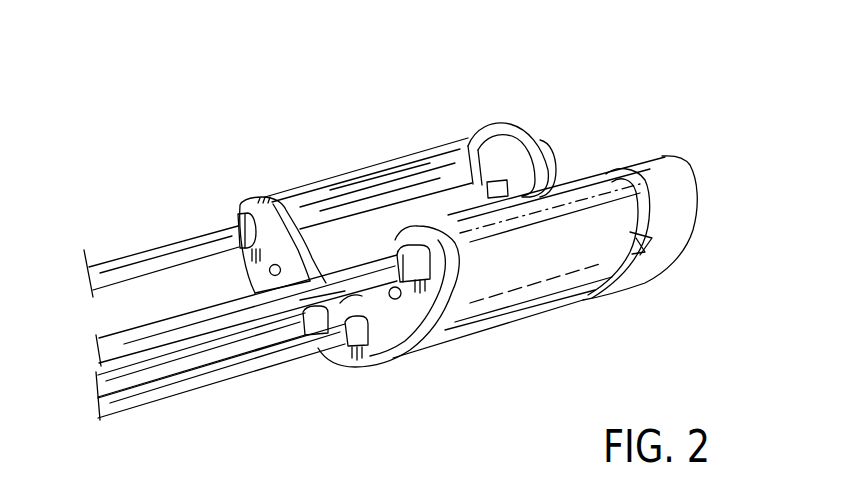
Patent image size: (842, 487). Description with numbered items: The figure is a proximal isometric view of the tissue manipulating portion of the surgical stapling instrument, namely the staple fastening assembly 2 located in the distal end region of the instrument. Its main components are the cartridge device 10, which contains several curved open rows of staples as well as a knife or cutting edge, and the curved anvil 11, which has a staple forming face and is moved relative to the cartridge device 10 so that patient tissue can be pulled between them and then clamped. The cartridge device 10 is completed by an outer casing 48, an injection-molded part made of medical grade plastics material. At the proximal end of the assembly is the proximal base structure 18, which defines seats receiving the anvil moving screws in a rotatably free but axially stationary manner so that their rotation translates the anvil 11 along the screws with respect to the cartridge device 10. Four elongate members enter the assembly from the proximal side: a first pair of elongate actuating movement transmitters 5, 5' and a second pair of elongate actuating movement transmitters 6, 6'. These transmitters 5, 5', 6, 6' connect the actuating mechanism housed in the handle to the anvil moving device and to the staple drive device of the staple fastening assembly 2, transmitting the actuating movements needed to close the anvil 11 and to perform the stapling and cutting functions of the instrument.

The staple fastening assembly 2 is at (287, 127).
The cartridge device 10 is at (371, 218).
The proximal base structure 18 is at (253, 202).
The curved anvil 11 is at (533, 168).
The outer casing 48 is at (587, 173).
The elongate actuating movement transmitter 5 is at (172, 230).
The elongate actuating movement transmitter 5' is at (235, 305).
The elongate actuating movement transmitter 6 is at (184, 363).
The elongate actuating movement transmitter 6' is at (233, 393).